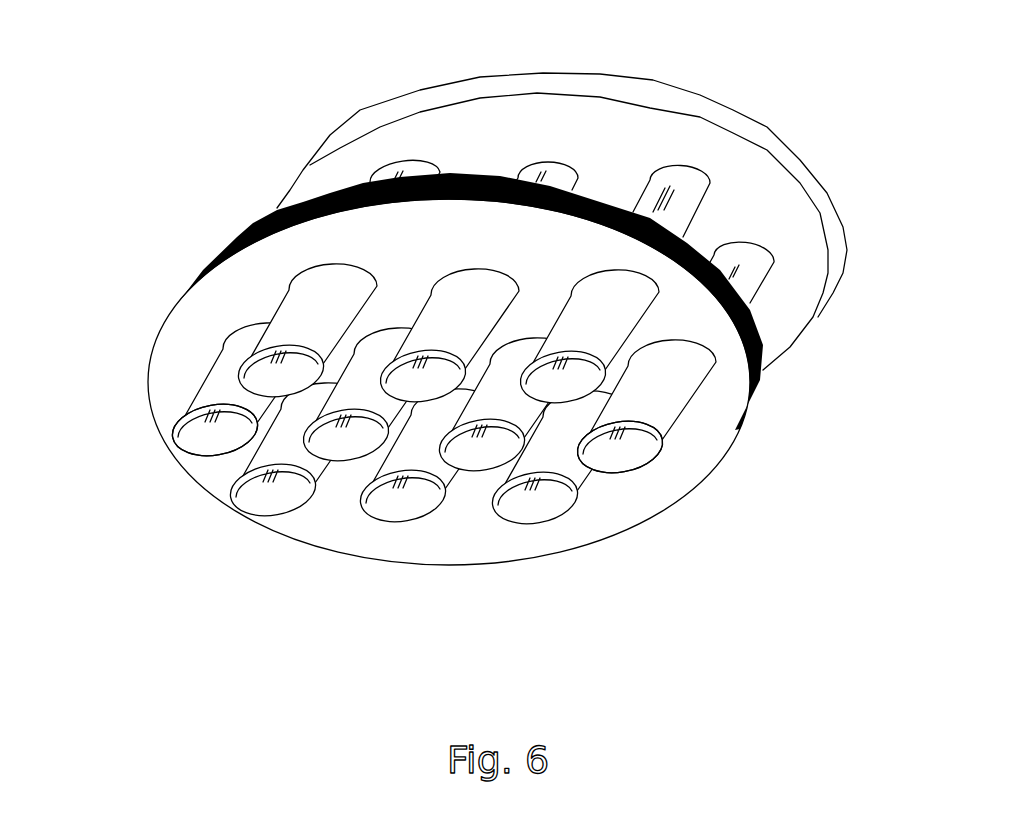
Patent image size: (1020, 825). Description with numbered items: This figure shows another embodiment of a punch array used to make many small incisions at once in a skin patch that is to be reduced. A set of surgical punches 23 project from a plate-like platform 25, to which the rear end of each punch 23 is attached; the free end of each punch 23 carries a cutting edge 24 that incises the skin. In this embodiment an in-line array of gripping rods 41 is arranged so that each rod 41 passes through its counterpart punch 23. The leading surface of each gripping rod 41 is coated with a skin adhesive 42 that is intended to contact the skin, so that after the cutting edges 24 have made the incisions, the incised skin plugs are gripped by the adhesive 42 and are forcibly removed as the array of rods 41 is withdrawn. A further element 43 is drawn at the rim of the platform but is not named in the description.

The punch 23 is at (318, 303).
The cutting edge 24 is at (310, 497).
The platform 25 is at (760, 333).
The gripping rod 41 is at (410, 170).
The skin adhesive 42 is at (207, 447).
The outer ring 43 is at (597, 78).